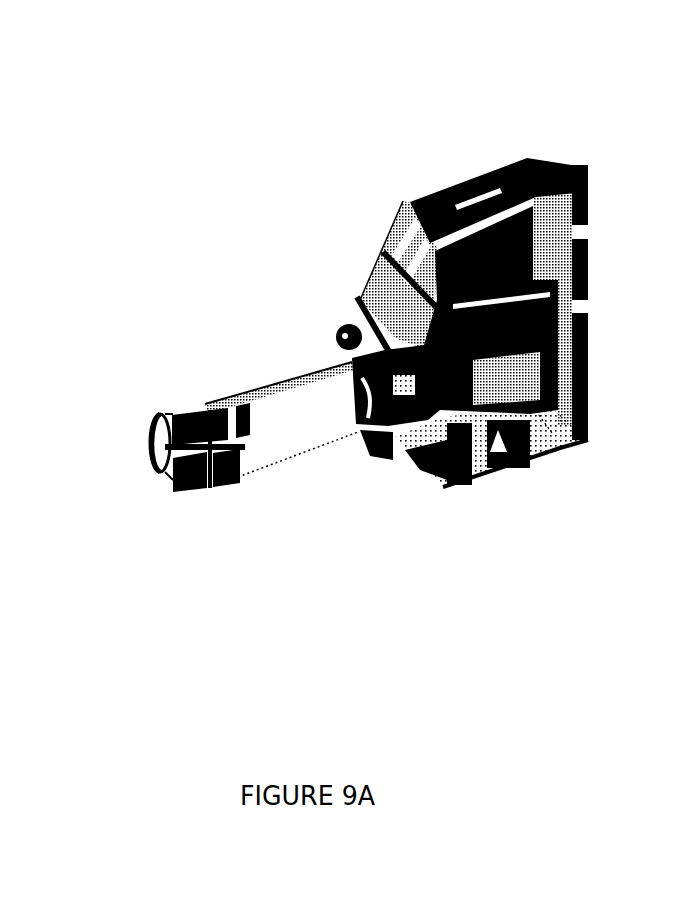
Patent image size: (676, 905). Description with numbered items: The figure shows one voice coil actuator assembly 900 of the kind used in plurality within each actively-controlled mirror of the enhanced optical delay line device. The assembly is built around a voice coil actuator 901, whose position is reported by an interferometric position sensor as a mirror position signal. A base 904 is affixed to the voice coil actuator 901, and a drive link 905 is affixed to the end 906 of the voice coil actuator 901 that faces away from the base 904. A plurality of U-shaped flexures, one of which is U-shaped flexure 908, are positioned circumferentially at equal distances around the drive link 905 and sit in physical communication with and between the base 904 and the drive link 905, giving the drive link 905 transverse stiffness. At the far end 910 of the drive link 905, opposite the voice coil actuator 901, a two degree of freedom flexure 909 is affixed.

The voice coil actuator assembly 900 is at (379, 289).
The voice coil actuator 901 is at (557, 327).
The base 904 is at (570, 440).
The drive link 905 is at (297, 453).
The end of voice coil actuator 906 is at (390, 410).
The U-shaped flexure 908 is at (528, 435).
The two degree of freedom flexure 909 is at (167, 463).
The end of drive link 910 is at (227, 403).